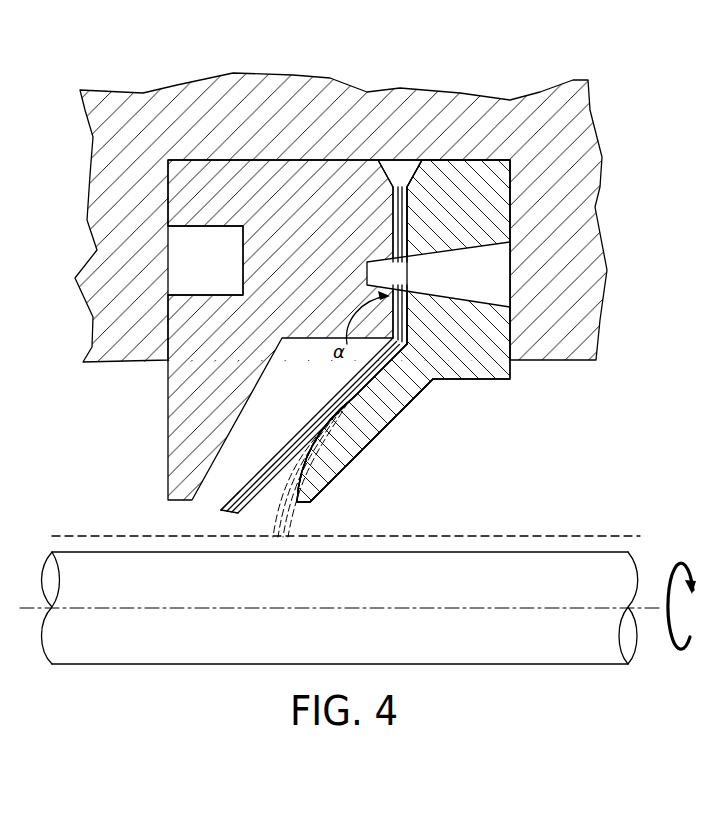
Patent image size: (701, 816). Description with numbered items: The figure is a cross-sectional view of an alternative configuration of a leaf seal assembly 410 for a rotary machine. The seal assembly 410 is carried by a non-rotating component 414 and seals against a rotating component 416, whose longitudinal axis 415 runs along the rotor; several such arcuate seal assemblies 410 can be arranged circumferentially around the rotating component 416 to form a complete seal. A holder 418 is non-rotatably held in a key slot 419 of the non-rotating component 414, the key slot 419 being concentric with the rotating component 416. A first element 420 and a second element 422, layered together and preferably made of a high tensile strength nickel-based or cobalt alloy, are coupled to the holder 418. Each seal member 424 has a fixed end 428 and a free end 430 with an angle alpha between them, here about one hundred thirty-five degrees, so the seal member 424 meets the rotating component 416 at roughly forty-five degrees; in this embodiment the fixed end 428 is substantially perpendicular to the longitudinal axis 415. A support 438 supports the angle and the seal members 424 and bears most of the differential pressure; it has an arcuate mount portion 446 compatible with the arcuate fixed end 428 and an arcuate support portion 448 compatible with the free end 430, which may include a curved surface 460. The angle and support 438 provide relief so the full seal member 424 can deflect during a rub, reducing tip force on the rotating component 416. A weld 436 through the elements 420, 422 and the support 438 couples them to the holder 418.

The seal assembly 410 is at (494, 422).
The non-rotating component 414 is at (562, 108).
The longitudinal axis 415 is at (650, 608).
The rotating component 416 is at (358, 591).
The holder 418 is at (190, 187).
The key slot 419 is at (243, 265).
The first element 420 is at (232, 494).
The second element 422 is at (225, 513).
The seal member 424 is at (313, 420).
The fixed end 428 is at (404, 223).
The free end 430 is at (272, 467).
The weld 436 is at (484, 273).
The support 438 is at (414, 424).
The arcuate mount portion 446 is at (495, 200).
The arcuate support portion 448 is at (373, 420).
The curved surface 460 is at (383, 370).